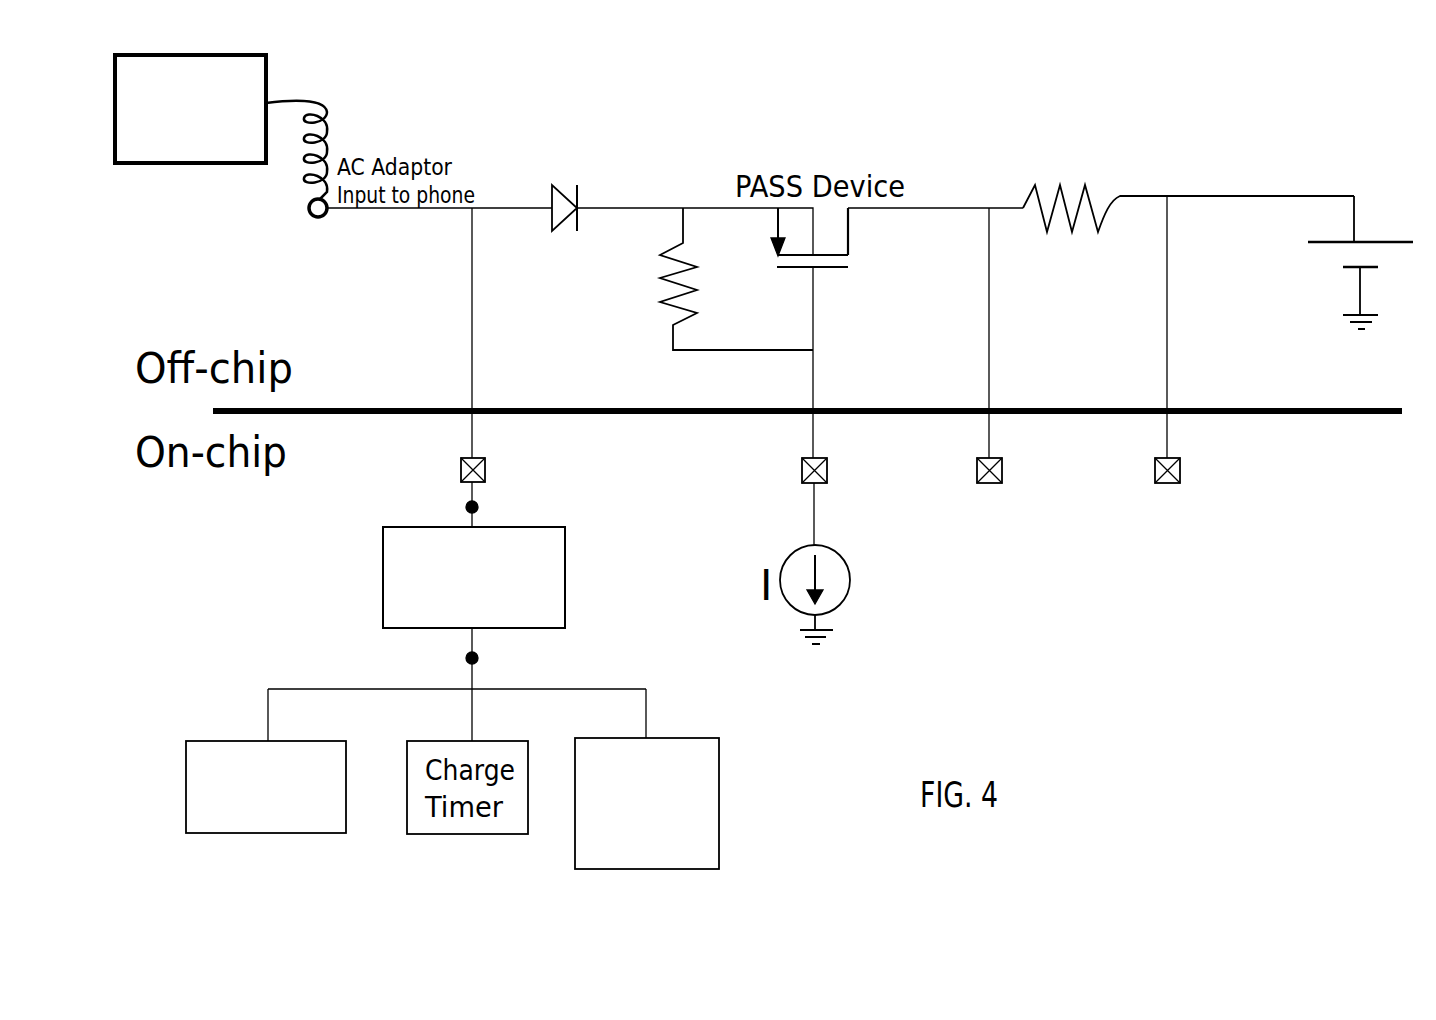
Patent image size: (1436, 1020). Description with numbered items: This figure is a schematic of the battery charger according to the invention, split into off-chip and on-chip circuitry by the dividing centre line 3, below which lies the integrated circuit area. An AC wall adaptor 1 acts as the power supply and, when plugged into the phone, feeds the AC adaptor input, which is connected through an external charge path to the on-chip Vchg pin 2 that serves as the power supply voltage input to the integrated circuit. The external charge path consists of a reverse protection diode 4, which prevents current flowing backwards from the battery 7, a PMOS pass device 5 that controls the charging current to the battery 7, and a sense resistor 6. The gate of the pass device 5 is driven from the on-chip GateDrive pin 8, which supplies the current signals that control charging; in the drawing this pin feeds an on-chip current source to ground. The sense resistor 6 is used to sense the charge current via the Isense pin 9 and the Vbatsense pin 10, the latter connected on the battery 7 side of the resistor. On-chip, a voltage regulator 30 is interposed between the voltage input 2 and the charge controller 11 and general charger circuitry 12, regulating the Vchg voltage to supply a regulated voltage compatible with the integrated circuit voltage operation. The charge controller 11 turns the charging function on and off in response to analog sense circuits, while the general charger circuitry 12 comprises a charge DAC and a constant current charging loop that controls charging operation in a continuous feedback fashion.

The wall adaptor 1 is at (268, 82).
The Vchg pin 2 is at (462, 458).
The centre line 3 is at (1363, 406).
The reverse protection diode 4 is at (578, 219).
The PMOS pass device 5 is at (858, 256).
The sense resistor 6 is at (1078, 222).
The battery 7 is at (1343, 240).
The GateDrive pin 8 is at (801, 470).
The Isense pin 9 is at (978, 457).
The Vbatsense pin 10 is at (1158, 457).
The charge controller 11 is at (332, 835).
The general charger circuitry 12 is at (720, 776).
The voltage regulator 30 is at (566, 598).